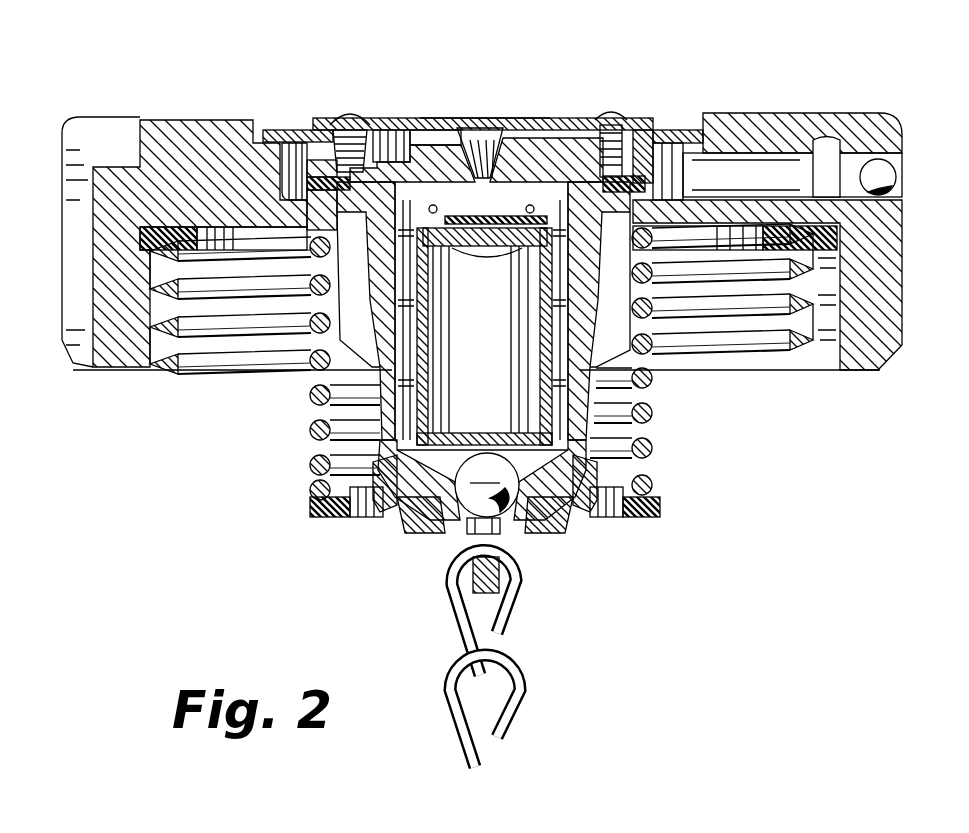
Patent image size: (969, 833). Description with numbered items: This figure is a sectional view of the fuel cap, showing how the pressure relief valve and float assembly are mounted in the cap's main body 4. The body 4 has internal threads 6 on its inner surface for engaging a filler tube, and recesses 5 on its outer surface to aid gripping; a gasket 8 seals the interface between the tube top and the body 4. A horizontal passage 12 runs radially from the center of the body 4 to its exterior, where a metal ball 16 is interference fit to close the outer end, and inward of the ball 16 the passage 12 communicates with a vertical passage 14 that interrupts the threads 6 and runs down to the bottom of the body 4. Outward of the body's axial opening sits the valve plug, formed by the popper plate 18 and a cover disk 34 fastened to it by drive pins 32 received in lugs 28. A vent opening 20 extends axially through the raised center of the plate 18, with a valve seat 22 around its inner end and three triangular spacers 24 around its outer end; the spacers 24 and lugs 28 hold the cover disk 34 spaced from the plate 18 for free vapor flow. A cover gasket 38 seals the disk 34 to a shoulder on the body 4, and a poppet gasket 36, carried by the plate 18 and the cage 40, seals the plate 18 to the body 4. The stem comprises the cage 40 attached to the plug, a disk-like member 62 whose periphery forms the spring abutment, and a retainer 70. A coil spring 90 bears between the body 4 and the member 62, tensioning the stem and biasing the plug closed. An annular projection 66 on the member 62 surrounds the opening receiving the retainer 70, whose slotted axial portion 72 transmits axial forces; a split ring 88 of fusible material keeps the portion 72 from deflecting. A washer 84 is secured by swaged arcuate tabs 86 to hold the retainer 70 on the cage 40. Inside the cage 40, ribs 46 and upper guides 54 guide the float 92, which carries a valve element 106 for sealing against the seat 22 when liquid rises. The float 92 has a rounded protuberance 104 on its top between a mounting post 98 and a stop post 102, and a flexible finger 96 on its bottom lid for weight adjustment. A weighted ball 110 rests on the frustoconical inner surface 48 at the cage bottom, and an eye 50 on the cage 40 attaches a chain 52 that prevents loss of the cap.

The main body 4 is at (200, 118).
The recesses 5 is at (73, 295).
The internal threads 6 is at (187, 370).
The gasket 8 is at (140, 242).
The horizontal passage 12 is at (748, 178).
The vertical passage 14 is at (847, 368).
The metal ball 16 is at (878, 158).
The popper plate 18 is at (392, 160).
The vent opening 20 is at (488, 150).
The valve seat 22 is at (447, 192).
The triangular spacers 24 is at (530, 165).
The lugs 28 is at (668, 143).
The drive pins 32 is at (610, 112).
The cover disk 34 is at (468, 130).
The poppet gasket 36 is at (270, 145).
The cover gasket 38 is at (690, 130).
The cage 40 is at (330, 432).
The ribs 46 is at (398, 357).
The frustoconical inner surface 48 is at (600, 478).
The eye 50 is at (505, 585).
The chain 52 is at (525, 683).
The guides 54 is at (366, 311).
The disk-like member 62 is at (640, 518).
The annular projection 66 is at (597, 473).
The retainer 70 is at (420, 527).
The axial portion 72 is at (573, 525).
The washer 84 is at (433, 533).
The arcuate tabs 86 is at (505, 532).
The split ring 88 is at (390, 527).
The coil spring 90 is at (653, 378).
The float 92 is at (560, 322).
The flexible finger 96 is at (522, 398).
The mounting post 98 is at (522, 265).
The stop post 102 is at (448, 290).
The rounded protuberance 104 is at (430, 240).
The retainer bar 106 is at (470, 212).
The weighted ball 110 is at (487, 485).